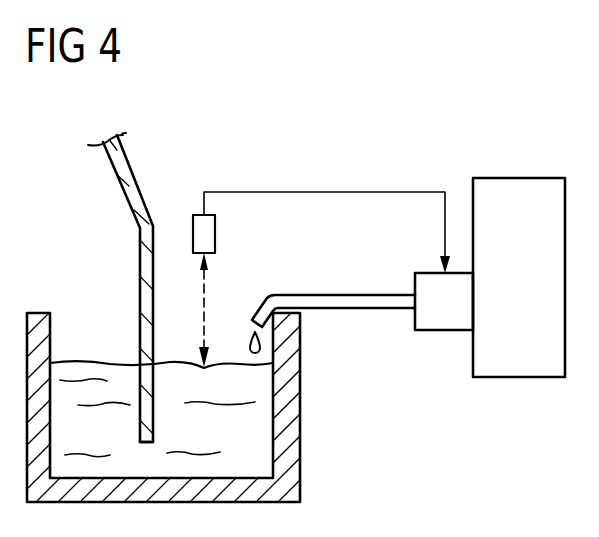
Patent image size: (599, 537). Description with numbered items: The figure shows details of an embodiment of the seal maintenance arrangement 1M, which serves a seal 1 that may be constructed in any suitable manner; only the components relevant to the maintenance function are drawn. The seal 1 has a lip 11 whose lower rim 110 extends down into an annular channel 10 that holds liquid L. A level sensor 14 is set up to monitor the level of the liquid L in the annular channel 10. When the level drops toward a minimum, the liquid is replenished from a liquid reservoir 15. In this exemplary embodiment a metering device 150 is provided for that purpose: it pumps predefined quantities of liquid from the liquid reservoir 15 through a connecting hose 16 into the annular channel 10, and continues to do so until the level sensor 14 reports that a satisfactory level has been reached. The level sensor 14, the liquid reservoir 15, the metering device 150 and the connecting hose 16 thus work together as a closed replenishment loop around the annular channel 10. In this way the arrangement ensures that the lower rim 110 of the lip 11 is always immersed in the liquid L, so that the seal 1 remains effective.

The seal 1 is at (162, 163).
The seal maintenance arrangement 1M is at (458, 117).
The annular channel 10 is at (288, 417).
The lip 11 is at (135, 197).
The lower rim 110 is at (153, 440).
The level sensor 14 is at (207, 233).
The liquid reservoir 15 is at (515, 188).
The metering device 150 is at (443, 318).
The connecting hose 16 is at (345, 303).
The liquid L is at (260, 455).